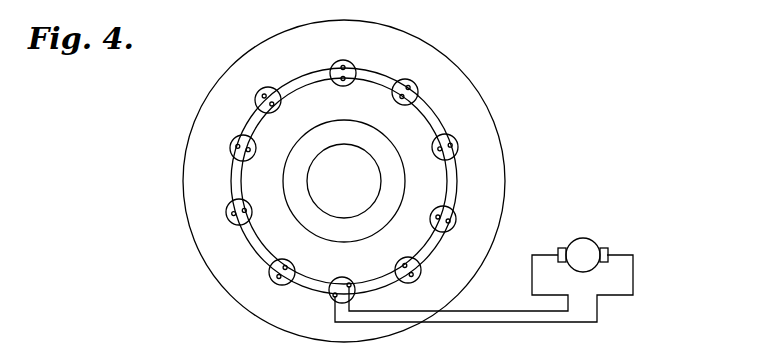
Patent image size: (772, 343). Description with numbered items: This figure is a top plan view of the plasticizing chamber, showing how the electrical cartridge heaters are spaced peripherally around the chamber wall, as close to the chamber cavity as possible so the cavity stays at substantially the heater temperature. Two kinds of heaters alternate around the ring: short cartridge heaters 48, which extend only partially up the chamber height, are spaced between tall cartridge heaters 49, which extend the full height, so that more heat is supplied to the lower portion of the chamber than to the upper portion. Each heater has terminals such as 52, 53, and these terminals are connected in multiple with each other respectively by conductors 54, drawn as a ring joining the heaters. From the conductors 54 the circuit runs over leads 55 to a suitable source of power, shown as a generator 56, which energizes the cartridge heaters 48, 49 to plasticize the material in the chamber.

The cartridge heater 48 is at (458, 152).
The cartridge heater 49 is at (412, 83).
The terminal 52 is at (450, 144).
The terminal 53 is at (284, 292).
The conductors 54 is at (306, 82).
The leads 55 is at (493, 310).
The generator 56 is at (580, 237).